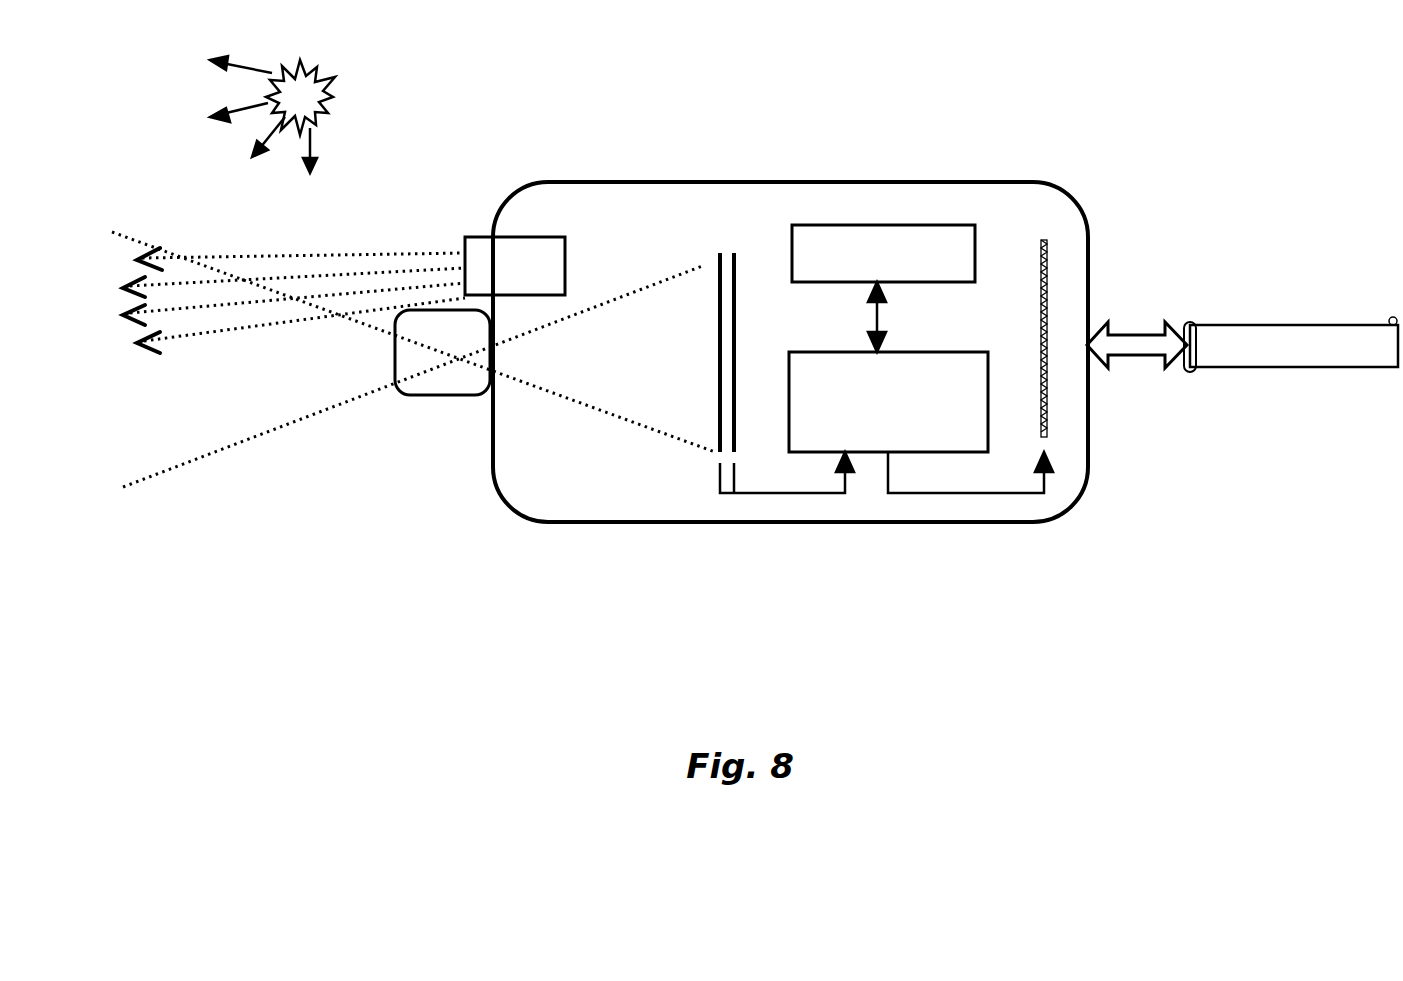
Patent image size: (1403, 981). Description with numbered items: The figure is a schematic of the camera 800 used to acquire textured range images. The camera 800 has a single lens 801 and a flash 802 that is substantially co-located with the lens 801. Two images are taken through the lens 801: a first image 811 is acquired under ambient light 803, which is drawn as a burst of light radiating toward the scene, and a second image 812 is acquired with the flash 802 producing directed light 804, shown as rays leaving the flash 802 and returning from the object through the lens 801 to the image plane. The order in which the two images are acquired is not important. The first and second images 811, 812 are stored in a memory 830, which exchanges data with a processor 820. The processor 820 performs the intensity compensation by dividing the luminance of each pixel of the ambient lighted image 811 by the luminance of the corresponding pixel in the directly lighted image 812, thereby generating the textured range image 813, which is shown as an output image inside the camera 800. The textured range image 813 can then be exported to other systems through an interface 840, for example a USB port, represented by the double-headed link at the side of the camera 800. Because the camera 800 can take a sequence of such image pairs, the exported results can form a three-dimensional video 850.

The camera 800 is at (835, 181).
The single lens 801 is at (452, 395).
The flash 802 is at (481, 237).
The ambient light 803 is at (333, 92).
The directed light 804 is at (253, 270).
The first image 811 is at (717, 320).
The second image 812 is at (737, 293).
The textured range image 813 is at (1043, 265).
The processor 820 is at (847, 352).
The memory 830 is at (903, 282).
The interface 840 is at (1143, 353).
The 3D video 850 is at (1228, 372).